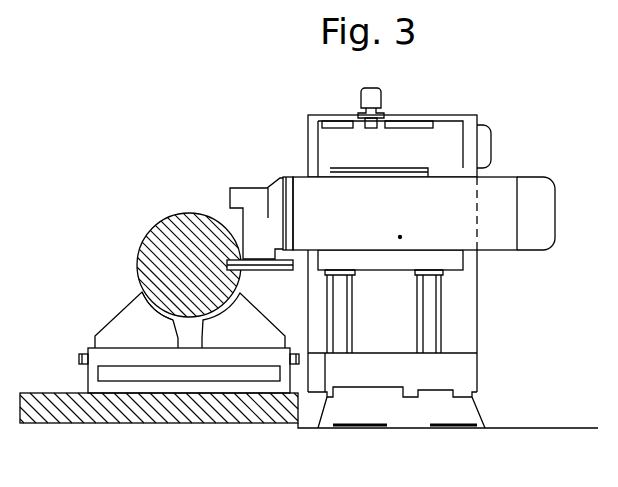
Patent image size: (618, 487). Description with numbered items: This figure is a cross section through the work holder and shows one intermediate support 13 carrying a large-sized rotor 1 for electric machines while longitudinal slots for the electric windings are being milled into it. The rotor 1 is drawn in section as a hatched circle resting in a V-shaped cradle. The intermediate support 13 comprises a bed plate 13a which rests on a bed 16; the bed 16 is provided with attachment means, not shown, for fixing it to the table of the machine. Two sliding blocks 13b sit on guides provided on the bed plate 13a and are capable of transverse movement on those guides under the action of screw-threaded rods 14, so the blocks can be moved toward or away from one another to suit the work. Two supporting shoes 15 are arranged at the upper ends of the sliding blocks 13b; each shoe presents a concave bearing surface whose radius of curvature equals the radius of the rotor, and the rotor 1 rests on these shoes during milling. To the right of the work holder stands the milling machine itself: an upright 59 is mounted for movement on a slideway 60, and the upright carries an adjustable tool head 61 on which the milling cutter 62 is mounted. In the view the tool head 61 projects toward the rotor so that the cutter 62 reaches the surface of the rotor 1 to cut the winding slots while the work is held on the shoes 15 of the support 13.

The rotor 1 is at (173, 227).
The intermediate support 13 is at (165, 401).
The bed plate 13a is at (160, 357).
The sliding blocks 13b is at (128, 320).
The screw-threaded rods 14 is at (78, 360).
The supporting shoes 15 is at (143, 293).
The bed 16 is at (246, 415).
The upright 59 is at (442, 135).
The slideway 60 is at (413, 417).
The adjustable tool head 61 is at (254, 200).
The milling cutter 62 is at (291, 266).